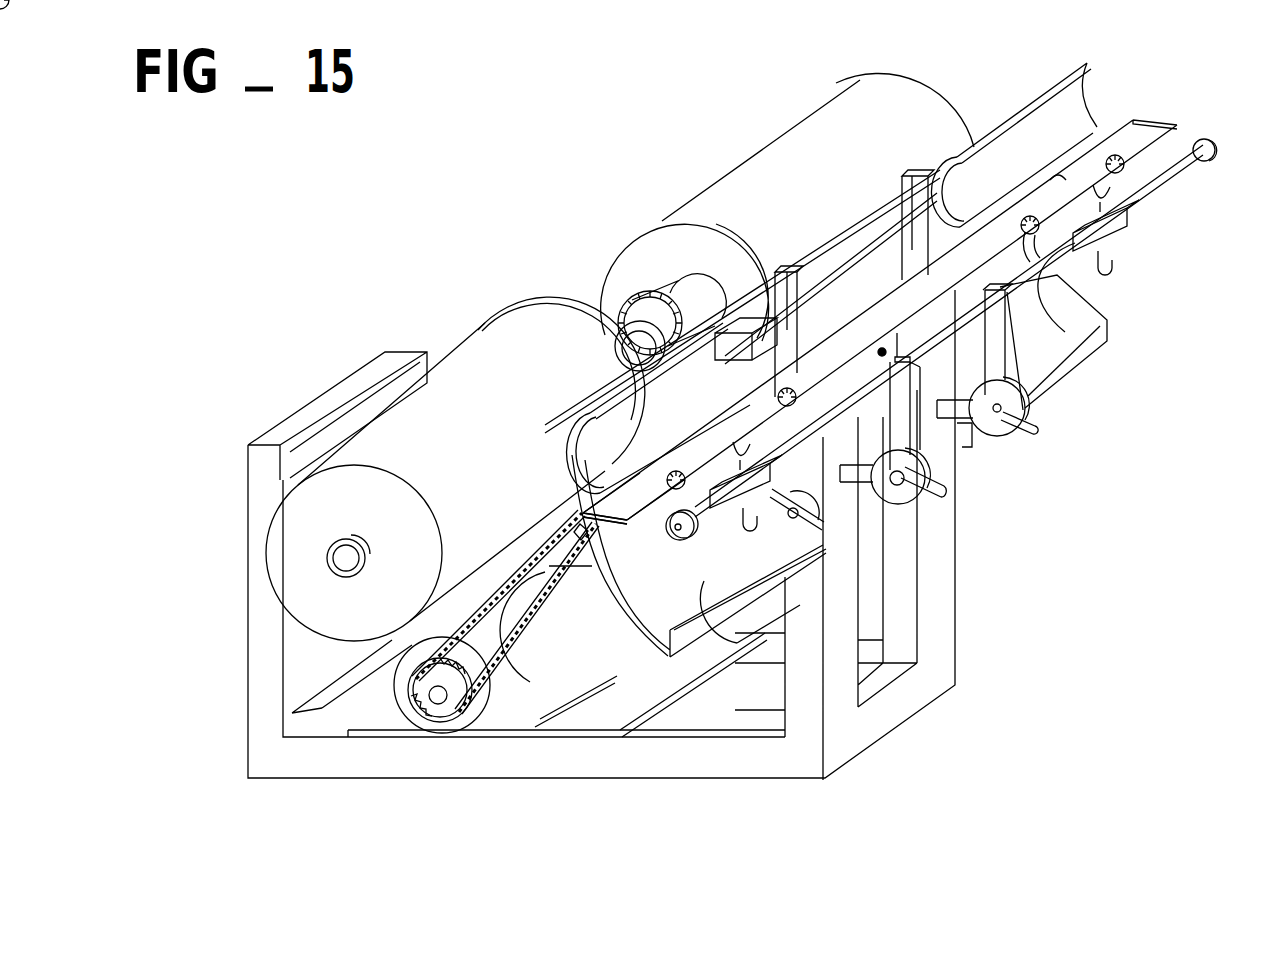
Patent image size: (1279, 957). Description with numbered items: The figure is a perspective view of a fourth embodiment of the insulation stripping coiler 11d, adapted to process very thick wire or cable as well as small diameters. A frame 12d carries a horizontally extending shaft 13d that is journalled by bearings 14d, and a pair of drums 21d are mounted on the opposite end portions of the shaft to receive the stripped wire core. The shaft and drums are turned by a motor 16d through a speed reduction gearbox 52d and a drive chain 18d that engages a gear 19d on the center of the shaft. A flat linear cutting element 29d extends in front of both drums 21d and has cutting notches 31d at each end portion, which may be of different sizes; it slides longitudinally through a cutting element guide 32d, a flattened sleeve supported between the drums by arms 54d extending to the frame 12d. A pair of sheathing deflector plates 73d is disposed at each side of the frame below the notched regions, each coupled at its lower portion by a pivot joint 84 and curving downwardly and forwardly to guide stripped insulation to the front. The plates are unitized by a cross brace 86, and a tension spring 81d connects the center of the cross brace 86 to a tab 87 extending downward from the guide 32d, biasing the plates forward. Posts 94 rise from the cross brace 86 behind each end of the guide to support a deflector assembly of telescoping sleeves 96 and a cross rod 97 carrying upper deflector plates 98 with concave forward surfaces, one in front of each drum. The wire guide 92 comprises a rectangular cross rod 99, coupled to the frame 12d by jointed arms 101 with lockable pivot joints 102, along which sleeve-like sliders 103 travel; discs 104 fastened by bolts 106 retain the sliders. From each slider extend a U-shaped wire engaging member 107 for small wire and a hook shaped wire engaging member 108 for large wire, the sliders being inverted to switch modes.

The insulation stripping coiler 11d is at (486, 283).
The frame 12d is at (957, 510).
The shaft 13d is at (638, 345).
The bearings 14d is at (684, 297).
The motor 16d is at (584, 612).
The drive chain 18d is at (513, 630).
The gear 19d is at (637, 310).
The drums 21d is at (476, 435).
The cutting element 29d is at (640, 518).
The cutting notches 31d is at (678, 470).
The cutting element guide 32d is at (985, 332).
The speed reduction gearbox 52d is at (420, 640).
The arms 54d is at (985, 360).
The sheathing deflector plates 73d is at (765, 602).
The tension spring 81d is at (868, 310).
The pivot joint 84 is at (817, 532).
The cross brace 86 is at (567, 520).
The tab 87 is at (897, 345).
The wire guide 92 is at (1133, 248).
The posts 94 is at (782, 268).
The sleeves 96 is at (799, 270).
The cross rod 97 is at (882, 235).
The upper deflector plates 98 is at (671, 422).
The cross rod 99 is at (1173, 183).
The jointed arms 101 is at (1020, 393).
The lockable pivot joints 102 is at (1017, 437).
The sliders 103 is at (1123, 215).
The discs 104 is at (668, 632).
The bolts 106 is at (650, 522).
The wire engaging member 107 is at (1077, 250).
The wire engaging member 108 is at (1110, 272).